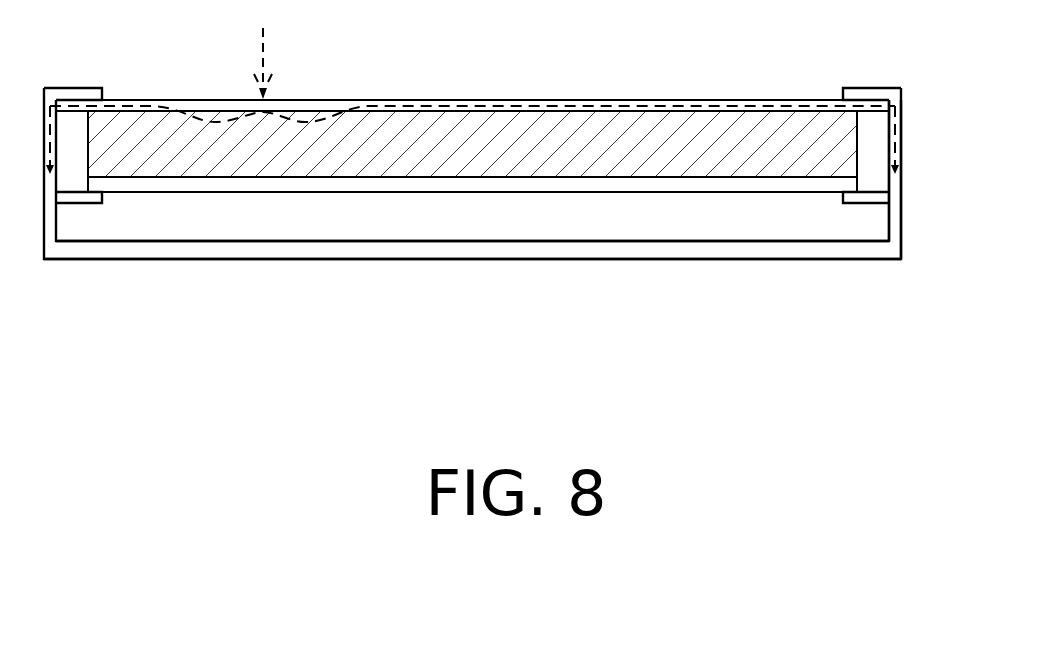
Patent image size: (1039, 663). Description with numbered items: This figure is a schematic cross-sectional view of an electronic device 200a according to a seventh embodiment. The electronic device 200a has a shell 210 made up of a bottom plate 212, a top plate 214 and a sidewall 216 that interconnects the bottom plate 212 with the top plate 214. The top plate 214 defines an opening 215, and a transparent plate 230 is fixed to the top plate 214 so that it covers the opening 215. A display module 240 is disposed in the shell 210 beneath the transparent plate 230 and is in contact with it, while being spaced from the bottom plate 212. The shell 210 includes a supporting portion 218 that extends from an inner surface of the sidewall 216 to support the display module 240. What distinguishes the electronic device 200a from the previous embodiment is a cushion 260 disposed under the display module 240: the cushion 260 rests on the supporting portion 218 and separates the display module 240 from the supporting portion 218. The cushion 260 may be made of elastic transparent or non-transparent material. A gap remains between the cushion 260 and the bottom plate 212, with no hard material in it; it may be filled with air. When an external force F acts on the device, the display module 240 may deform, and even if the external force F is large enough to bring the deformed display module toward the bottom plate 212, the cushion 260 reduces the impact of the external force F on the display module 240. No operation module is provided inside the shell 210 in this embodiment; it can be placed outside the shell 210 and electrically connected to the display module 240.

The shell 210 is at (889, 270).
The bottom plate 212 is at (272, 250).
The top plate 214 is at (90, 95).
The opening 215 is at (812, 83).
The sidewall 216 is at (897, 230).
The supporting portion 218 is at (880, 195).
The transparent plate 230 is at (220, 110).
The display module 240 is at (613, 160).
The cushion 260 is at (393, 182).
The electronic device 200a is at (692, 368).
The external force F is at (263, 50).